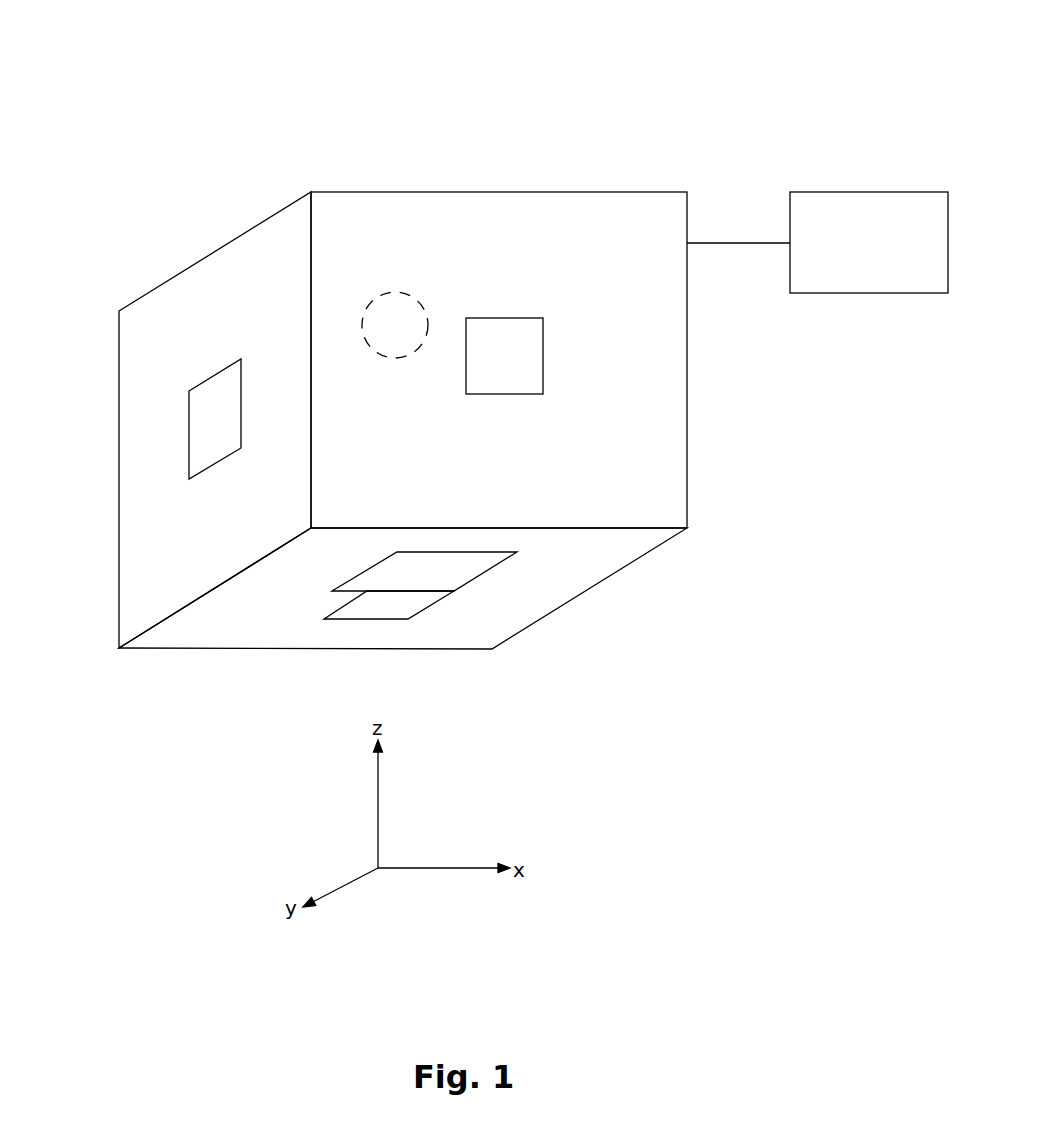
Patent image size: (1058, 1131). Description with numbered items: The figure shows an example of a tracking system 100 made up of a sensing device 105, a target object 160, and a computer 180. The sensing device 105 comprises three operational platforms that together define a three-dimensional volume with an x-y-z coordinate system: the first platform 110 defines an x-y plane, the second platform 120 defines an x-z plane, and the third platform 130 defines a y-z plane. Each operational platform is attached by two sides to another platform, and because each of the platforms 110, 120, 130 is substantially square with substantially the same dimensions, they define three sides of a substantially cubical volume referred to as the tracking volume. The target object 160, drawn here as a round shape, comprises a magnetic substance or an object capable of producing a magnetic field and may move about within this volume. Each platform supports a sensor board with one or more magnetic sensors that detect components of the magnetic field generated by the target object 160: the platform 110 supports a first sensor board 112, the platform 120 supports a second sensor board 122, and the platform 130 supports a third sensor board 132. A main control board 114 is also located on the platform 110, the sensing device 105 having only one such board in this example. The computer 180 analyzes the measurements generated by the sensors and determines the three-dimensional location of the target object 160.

The tracking system 100 is at (723, 27).
The sensing device 105 is at (607, 180).
The first platform 110 is at (165, 650).
The first sensor board 112 is at (427, 572).
The main control board 114 is at (415, 605).
The second platform 120 is at (687, 470).
The second sensor board 122 is at (530, 357).
The third platform 130 is at (119, 354).
The third sensor board 132 is at (208, 433).
The target object 160 is at (400, 293).
The computer 180 is at (867, 192).